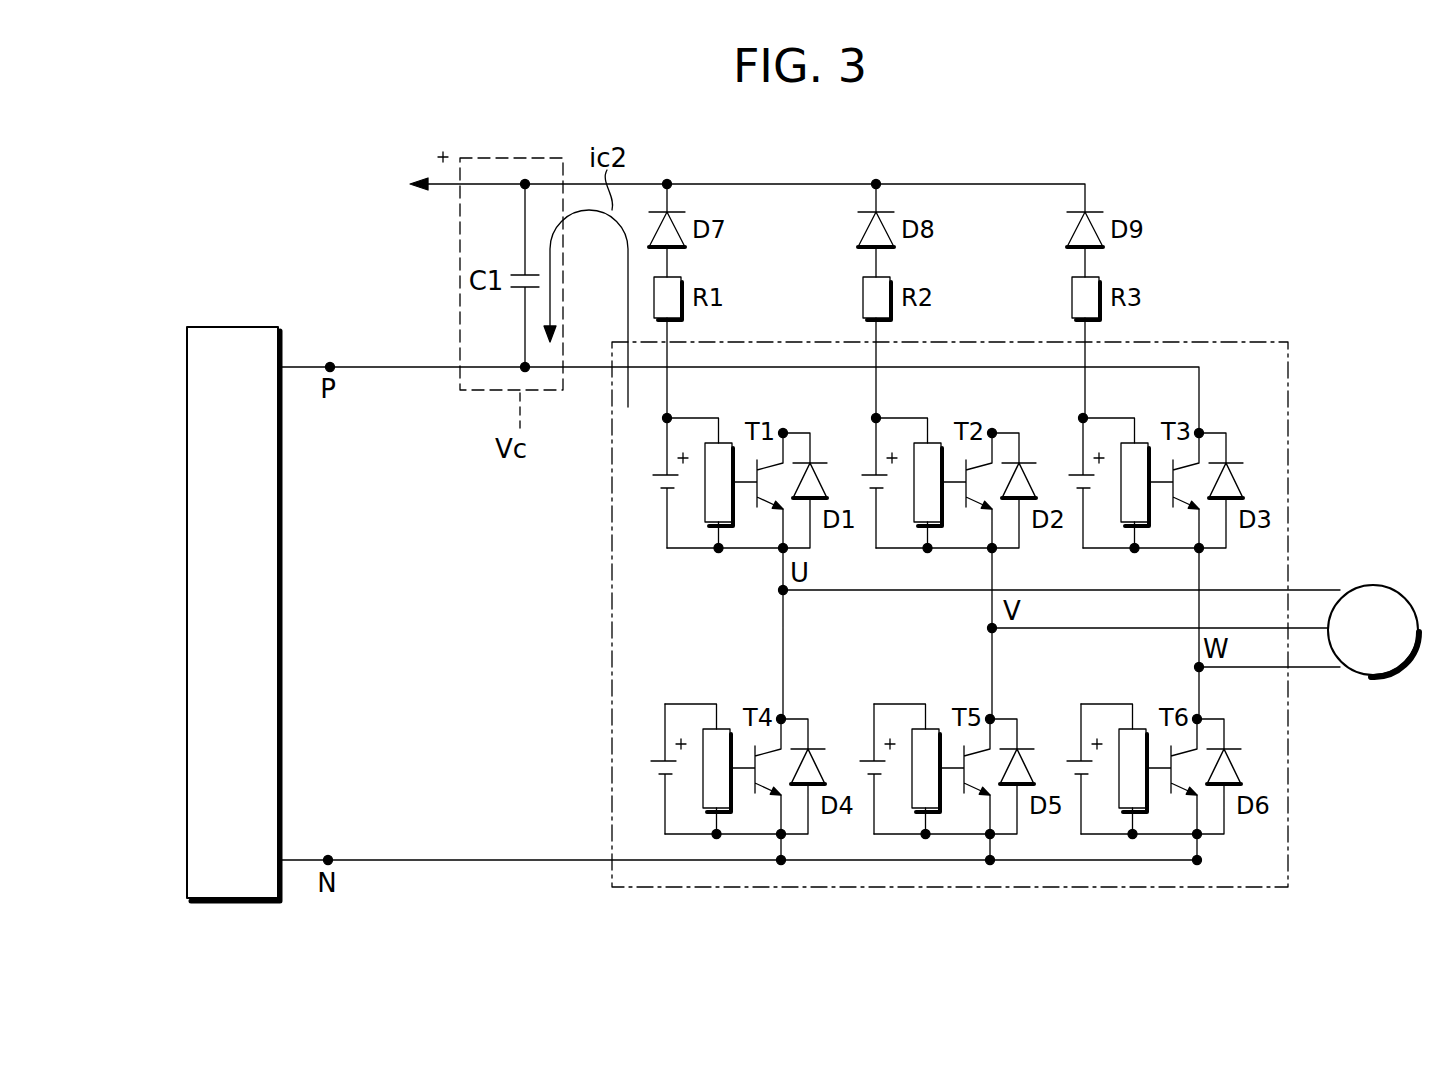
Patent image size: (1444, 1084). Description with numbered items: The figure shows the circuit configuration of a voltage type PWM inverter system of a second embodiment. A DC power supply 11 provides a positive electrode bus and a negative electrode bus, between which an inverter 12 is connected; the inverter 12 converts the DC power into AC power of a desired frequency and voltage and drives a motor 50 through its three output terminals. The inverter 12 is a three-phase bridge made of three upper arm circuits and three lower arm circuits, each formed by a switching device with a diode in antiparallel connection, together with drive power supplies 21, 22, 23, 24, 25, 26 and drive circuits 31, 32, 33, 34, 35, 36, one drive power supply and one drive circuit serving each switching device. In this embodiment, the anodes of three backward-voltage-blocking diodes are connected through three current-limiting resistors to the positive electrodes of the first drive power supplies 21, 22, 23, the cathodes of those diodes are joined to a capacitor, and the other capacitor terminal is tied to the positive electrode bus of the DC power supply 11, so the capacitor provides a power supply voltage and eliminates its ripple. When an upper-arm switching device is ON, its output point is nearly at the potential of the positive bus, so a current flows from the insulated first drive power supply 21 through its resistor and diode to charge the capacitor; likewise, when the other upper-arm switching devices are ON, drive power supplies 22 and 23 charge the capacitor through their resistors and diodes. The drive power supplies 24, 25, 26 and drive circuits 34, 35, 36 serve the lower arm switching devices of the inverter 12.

The DC power supply 11 is at (240, 327).
The inverter 12 is at (1202, 342).
The drive power supply 21 is at (650, 483).
The drive power supply 22 is at (858, 479).
The drive power supply 23 is at (1065, 479).
The drive power supply 24 is at (650, 764).
The drive power supply 25 is at (859, 764).
The drive power supply 26 is at (1066, 764).
The drive circuit 31 is at (725, 452).
The drive circuit 32 is at (934, 452).
The drive circuit 33 is at (1141, 452).
The drive circuit 34 is at (723, 738).
The drive circuit 35 is at (932, 738).
The drive circuit 36 is at (1139, 738).
The motor 50 is at (1394, 586).